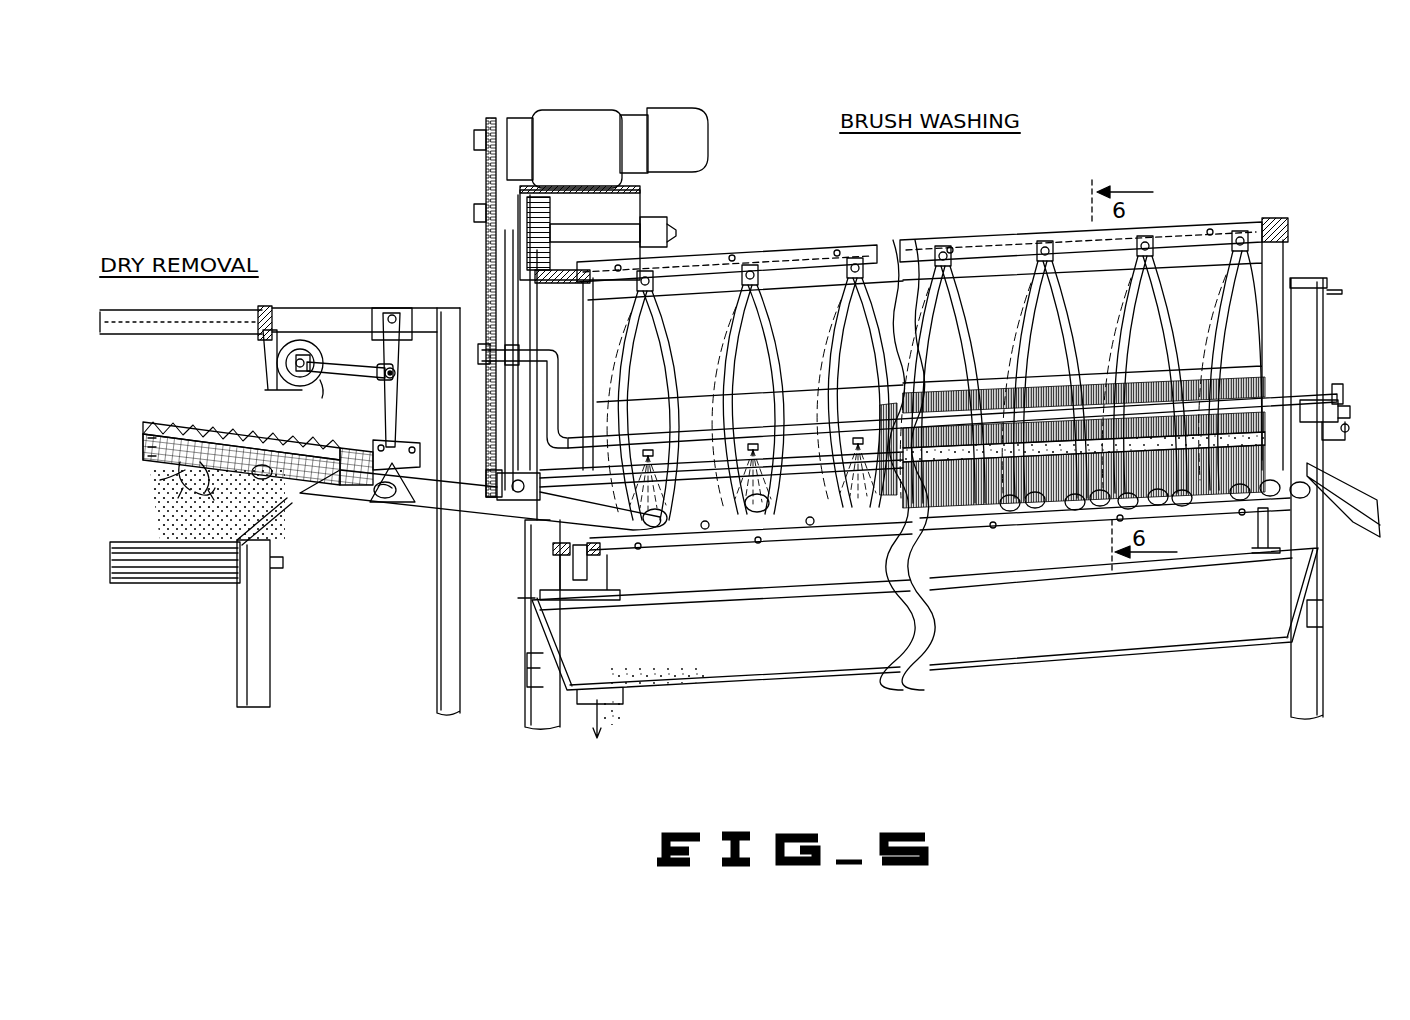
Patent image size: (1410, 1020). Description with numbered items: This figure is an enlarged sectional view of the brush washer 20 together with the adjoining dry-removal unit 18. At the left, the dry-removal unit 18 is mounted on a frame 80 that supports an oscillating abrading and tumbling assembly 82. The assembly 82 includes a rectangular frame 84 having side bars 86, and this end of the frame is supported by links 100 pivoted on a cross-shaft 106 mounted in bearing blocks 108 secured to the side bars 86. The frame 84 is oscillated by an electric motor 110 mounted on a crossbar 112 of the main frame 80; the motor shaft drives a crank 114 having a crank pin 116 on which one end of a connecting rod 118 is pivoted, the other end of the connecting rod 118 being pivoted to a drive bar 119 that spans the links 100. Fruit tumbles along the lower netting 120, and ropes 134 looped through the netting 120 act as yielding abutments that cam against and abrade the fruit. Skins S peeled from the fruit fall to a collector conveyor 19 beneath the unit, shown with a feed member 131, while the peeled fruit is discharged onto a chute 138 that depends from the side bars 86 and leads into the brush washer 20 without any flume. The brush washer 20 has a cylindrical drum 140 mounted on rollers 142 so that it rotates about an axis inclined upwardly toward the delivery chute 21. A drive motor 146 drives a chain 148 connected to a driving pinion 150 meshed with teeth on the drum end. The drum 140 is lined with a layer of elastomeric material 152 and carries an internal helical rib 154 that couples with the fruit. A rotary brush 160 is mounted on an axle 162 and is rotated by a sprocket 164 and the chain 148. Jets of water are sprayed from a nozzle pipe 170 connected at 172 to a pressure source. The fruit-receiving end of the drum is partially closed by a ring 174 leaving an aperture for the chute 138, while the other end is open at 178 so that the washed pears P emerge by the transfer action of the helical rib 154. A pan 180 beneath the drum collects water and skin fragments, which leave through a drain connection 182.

The dry-removal unit 18 is at (177, 414).
The collector conveyor 19 is at (122, 579).
The brush washer 20 is at (957, 192).
The delivery chute 21 is at (1362, 528).
The frame 80 is at (440, 600).
The oscillating abrading and tumbling assembly 82 is at (135, 424).
The rectangular frame 84 is at (224, 427).
The side bars 86 is at (292, 440).
The links 100 is at (393, 422).
The cross-shaft 106 is at (391, 500).
The bearing blocks 108 is at (487, 481).
The electric motor 110 is at (322, 341).
The crossbar 112 is at (258, 310).
The crank 114 is at (313, 354).
The crank pin 116 is at (293, 363).
The connecting rod 118 is at (314, 374).
The drive bar 119 is at (383, 374).
The lower netting 120 is at (148, 447).
The conveyor 131 is at (133, 311).
The ropes 134 is at (183, 485).
The chute 138 is at (527, 516).
The cylindrical drum 140 is at (1215, 235).
The rollers 142 is at (590, 574).
The drive motor 146 is at (592, 155).
The chain 148 is at (484, 180).
The driving pinion 150 is at (548, 212).
The layer of elastomeric material 152 is at (792, 260).
The helical rib 154 is at (727, 324).
The rotary brush 160 is at (905, 525).
The axle 162 is at (492, 484).
The sprocket 164 is at (523, 508).
The nozzle pipe 170 is at (697, 420).
The connection 172 is at (548, 350).
The ring 174 is at (585, 292).
The open end 178 is at (1303, 466).
The pan 180 is at (955, 672).
The drain connection 182 is at (627, 703).
The skins S is at (170, 509).
The pears P is at (270, 478).